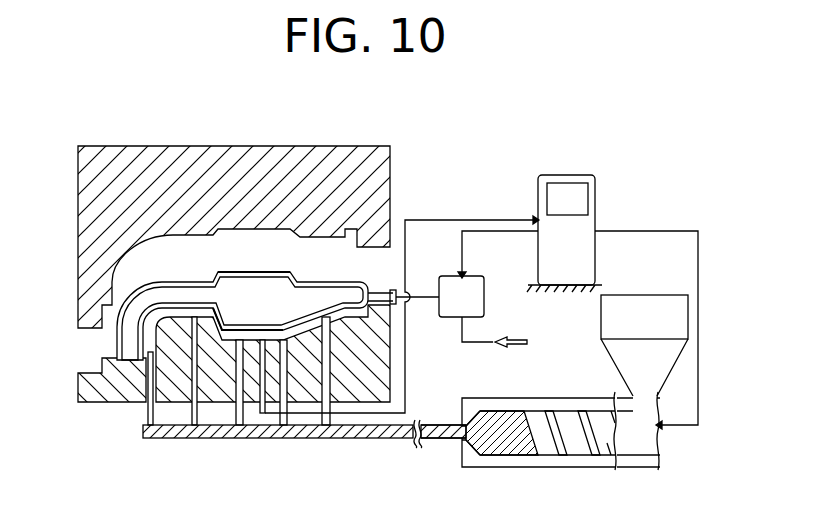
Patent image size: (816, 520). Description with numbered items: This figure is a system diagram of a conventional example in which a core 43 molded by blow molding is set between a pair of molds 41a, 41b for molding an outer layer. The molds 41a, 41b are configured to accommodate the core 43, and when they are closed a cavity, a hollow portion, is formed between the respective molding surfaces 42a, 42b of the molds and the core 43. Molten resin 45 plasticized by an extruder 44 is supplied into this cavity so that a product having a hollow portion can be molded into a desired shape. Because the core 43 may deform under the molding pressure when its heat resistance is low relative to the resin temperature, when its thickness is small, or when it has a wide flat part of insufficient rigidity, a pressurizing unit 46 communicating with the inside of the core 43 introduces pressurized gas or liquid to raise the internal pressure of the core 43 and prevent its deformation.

The mold 41a is at (90, 383).
The mold 41b is at (102, 172).
The molding surface 42a is at (185, 305).
The molding surface 42b is at (237, 230).
The core 43 is at (113, 343).
The extruder 44 is at (650, 461).
The molten resin 45 is at (258, 438).
The pressurizing unit 46 is at (448, 283).